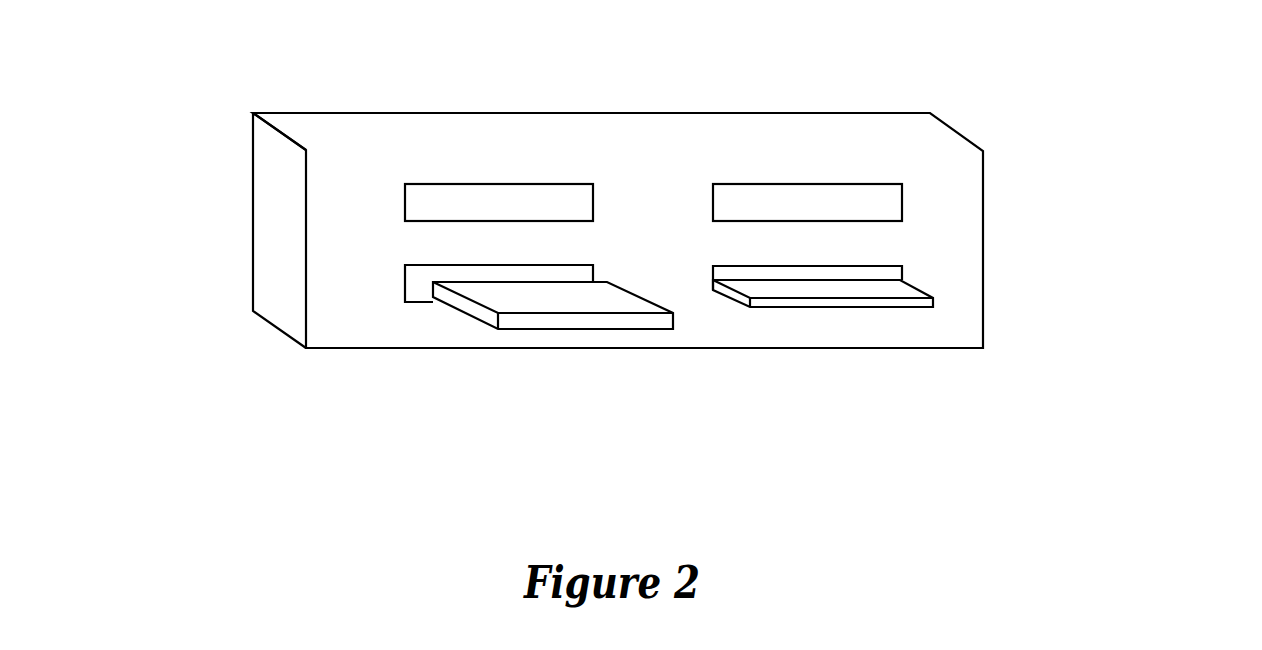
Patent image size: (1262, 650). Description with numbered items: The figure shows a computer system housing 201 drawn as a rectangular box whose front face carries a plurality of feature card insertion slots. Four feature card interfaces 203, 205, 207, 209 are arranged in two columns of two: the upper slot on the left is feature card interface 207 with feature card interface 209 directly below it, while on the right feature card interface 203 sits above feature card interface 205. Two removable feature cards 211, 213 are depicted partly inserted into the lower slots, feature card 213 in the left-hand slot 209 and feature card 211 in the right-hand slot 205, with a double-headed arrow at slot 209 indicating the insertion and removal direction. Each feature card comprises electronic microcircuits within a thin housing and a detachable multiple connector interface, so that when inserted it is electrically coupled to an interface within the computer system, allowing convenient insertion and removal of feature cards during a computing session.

The housing 201 is at (943, 130).
The feature card interface 203 is at (880, 212).
The feature card interface 205 is at (880, 270).
The feature card interface 207 is at (437, 215).
The feature card interface 209 is at (488, 337).
The feature card 211 is at (822, 303).
The feature card 213 is at (577, 322).